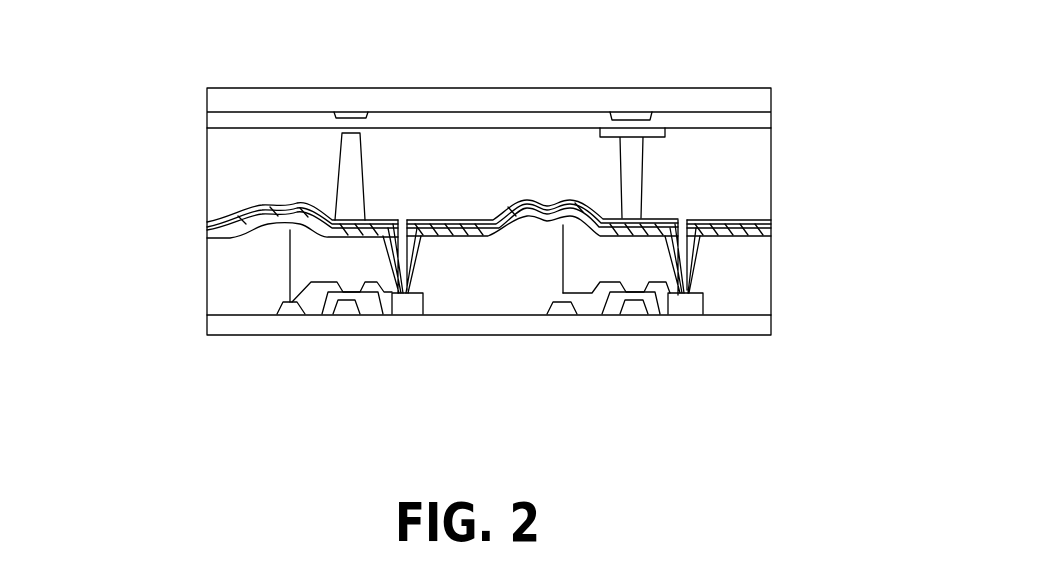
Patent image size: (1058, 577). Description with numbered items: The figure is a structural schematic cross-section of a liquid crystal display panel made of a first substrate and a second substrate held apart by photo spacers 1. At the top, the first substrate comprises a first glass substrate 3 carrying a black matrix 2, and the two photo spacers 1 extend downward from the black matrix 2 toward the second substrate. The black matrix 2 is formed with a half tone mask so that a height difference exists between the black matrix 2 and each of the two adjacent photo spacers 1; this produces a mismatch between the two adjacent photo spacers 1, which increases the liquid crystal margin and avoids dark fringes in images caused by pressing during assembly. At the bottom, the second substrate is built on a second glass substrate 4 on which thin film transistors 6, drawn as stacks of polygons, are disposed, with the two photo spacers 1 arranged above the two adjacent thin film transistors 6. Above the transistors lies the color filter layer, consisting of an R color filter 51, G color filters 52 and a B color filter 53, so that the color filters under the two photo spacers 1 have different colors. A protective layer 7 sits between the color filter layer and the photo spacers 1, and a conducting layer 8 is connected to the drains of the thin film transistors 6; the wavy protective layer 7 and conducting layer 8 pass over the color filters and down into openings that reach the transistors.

The photo spacer 1 is at (352, 173).
The black matrix 2 is at (352, 112).
The first glass substrate 3 is at (772, 100).
The second glass substrate 4 is at (758, 332).
The R color filter 51 is at (225, 285).
The G color filter 52 is at (367, 263).
The B color filter 53 is at (630, 272).
The thin film transistor 6 is at (347, 310).
The protective layer 7 is at (207, 231).
The conducting layer 8 is at (207, 222).